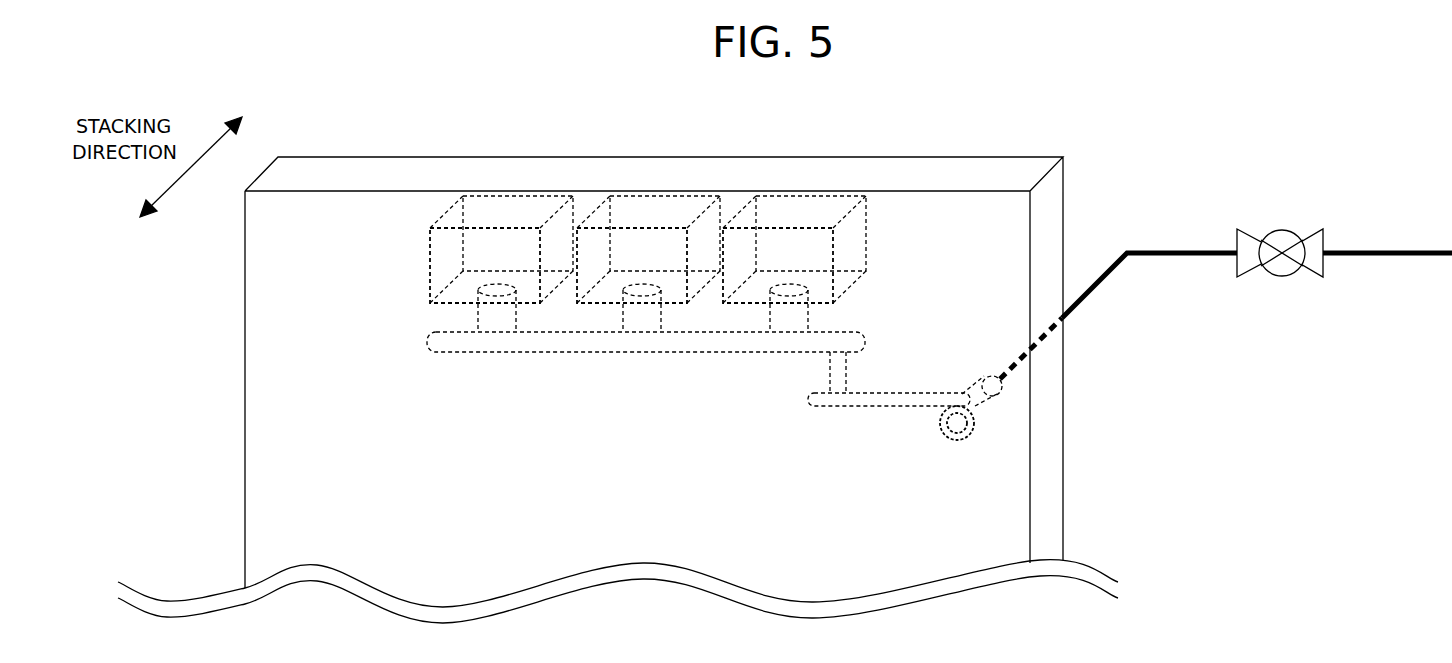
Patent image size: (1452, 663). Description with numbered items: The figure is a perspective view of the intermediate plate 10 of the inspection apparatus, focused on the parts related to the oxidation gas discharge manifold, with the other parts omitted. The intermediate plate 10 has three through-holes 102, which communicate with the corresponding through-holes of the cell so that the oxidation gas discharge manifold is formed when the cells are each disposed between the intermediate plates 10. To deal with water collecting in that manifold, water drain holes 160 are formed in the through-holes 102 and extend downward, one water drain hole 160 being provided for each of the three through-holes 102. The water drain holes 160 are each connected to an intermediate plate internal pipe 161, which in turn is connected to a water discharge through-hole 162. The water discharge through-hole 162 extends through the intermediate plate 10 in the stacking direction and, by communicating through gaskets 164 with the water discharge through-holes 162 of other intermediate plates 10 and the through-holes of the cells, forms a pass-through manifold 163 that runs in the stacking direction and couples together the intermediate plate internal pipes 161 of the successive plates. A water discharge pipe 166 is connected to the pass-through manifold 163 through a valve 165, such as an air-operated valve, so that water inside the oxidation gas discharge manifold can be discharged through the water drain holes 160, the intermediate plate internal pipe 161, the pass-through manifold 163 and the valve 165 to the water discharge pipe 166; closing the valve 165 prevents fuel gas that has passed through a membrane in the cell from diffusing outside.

The intermediate plate 10 is at (1065, 187).
The through-hole 102 is at (518, 228).
The water drain hole 160 is at (474, 312).
The intermediate plate internal pipe 161 is at (526, 353).
The water discharge through-hole 162 is at (988, 406).
The pass-through manifold 163 is at (1080, 302).
The gasket 164 is at (955, 441).
The valve 165 is at (1278, 278).
The water discharge pipe 166 is at (1392, 258).